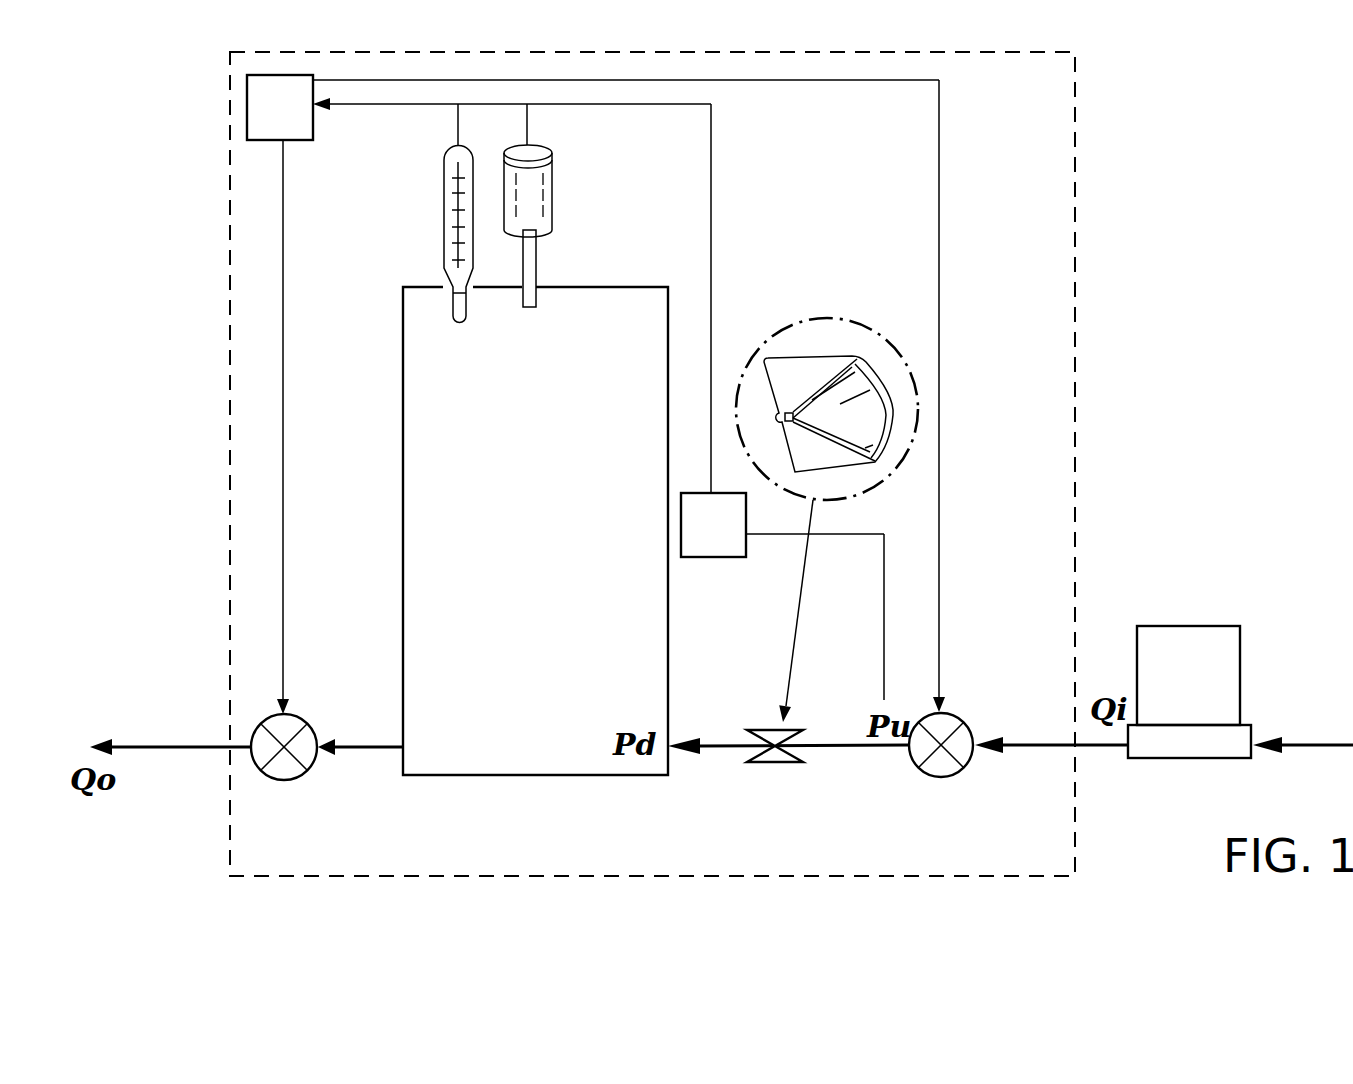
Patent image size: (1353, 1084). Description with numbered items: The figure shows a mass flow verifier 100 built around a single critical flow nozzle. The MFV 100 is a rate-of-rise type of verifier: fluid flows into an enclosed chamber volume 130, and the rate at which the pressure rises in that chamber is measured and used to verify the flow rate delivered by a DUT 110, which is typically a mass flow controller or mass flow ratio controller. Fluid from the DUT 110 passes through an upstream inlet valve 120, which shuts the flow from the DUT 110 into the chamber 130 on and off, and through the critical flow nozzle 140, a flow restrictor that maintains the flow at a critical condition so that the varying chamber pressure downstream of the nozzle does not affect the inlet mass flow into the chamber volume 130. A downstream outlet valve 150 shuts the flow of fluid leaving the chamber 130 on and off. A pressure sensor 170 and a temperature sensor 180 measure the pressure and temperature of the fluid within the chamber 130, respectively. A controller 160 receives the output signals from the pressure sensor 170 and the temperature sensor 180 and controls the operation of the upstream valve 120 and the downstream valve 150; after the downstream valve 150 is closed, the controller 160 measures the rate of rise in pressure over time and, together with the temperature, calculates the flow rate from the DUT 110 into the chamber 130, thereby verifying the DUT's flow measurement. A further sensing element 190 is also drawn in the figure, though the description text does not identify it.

The mass flow verifier 100 is at (512, 903).
The DUT 110 is at (1205, 759).
The upstream inlet valve 120 is at (962, 718).
The chamber volume 130 is at (578, 286).
The critical flow nozzle 140 is at (758, 728).
The downstream outlet valve 150 is at (300, 716).
The controller 160 is at (593, 284).
The pressure sensor 170 is at (530, 150).
The temperature sensor 180 is at (444, 157).
The upstream pressure sensor 190 is at (782, 596).